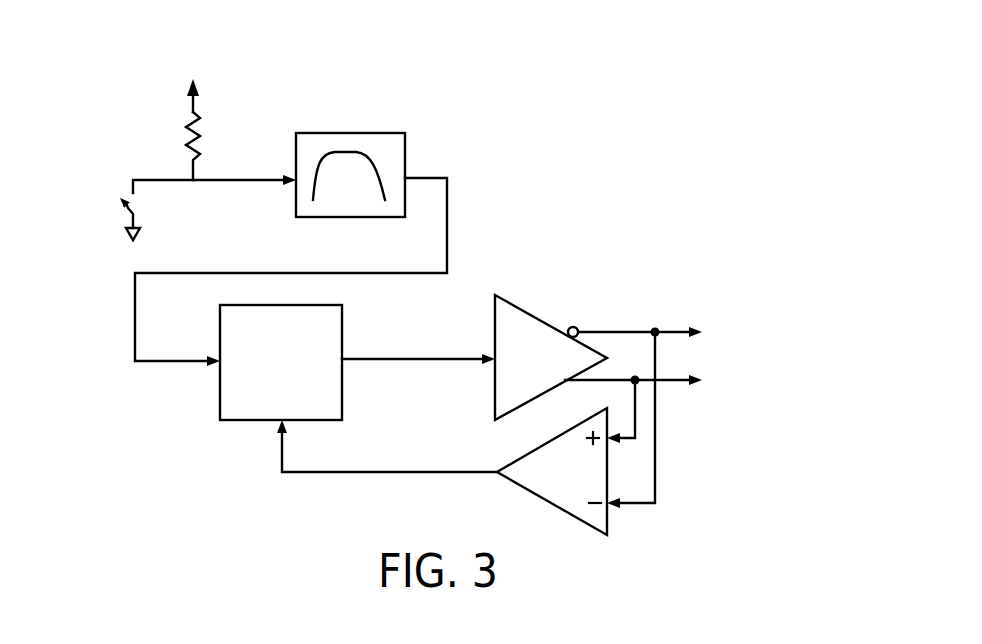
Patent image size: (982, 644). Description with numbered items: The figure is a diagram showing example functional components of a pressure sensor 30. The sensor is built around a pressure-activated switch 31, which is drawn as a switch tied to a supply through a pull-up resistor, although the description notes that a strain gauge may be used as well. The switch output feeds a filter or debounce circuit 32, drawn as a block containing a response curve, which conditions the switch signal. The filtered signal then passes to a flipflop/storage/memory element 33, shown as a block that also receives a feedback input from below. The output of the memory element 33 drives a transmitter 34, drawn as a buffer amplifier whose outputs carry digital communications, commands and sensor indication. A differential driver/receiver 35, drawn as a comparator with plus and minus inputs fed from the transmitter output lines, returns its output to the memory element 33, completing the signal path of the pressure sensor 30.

The pressure sensor 30 is at (467, 290).
The pressure-activated switch 31 is at (127, 194).
The filter or debounce circuit 32 is at (358, 141).
The flipflop/storage/memory element 33 is at (323, 323).
The transmitter 34 is at (532, 324).
The differential driver/receiver 35 is at (561, 478).